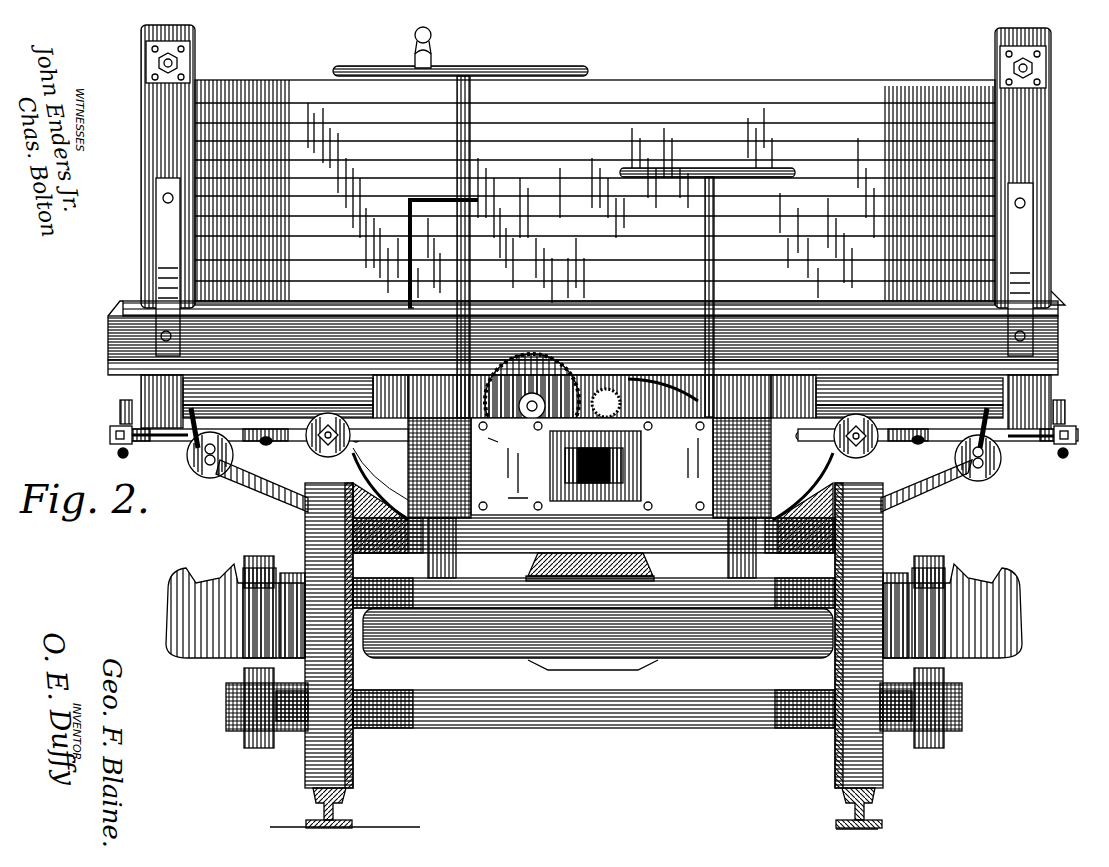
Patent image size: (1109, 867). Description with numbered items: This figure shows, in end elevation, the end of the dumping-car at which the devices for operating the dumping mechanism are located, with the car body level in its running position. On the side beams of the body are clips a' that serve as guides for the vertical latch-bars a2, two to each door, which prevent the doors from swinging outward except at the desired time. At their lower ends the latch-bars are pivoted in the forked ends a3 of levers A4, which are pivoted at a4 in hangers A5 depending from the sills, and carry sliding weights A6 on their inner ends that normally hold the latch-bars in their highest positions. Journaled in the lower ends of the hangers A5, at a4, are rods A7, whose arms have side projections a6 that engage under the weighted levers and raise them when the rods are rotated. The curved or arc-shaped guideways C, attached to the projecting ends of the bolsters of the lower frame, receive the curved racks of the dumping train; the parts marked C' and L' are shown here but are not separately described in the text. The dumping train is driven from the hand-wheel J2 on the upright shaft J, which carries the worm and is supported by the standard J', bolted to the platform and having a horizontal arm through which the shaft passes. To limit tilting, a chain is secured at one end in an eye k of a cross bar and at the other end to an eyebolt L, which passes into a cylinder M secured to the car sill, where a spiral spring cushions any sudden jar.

The clip a' is at (596, 227).
The hand-wheel J2 is at (460, 51).
The upright shaft J is at (626, 247).
The standard J' is at (443, 254).
The cylinder M is at (593, 398).
The gear wheel L' is at (532, 401).
The eyebolt L is at (585, 439).
The eye k is at (583, 424).
The latch-bar a2 is at (118, 392).
The forked end a3 is at (102, 430).
The sliding weight A6 is at (315, 448).
The pivot a4 is at (182, 456).
The rod A7 is at (594, 486).
The hanger A5 is at (185, 405).
The lever A4 is at (164, 440).
The side projection a6 is at (260, 440).
The curved guideway C is at (587, 486).
The brace web C' is at (595, 511).